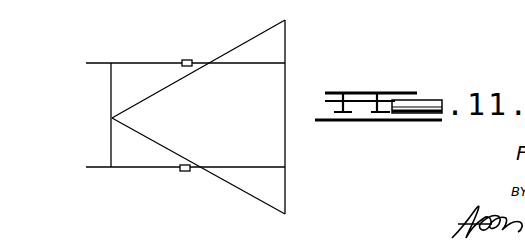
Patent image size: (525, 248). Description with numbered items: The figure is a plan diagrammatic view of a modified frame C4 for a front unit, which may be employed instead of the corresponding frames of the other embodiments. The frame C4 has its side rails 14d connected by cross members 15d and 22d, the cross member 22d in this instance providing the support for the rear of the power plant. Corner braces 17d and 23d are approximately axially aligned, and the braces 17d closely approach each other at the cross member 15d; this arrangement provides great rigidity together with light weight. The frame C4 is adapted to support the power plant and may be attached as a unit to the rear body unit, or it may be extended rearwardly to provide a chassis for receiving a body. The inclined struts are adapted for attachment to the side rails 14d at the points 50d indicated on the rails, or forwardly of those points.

The frame C4 is at (141, 62).
The side rails 14d is at (127, 168).
The cross member 15d is at (108, 128).
The corner braces 17d is at (158, 91).
The cross member 22d is at (285, 148).
The corner braces 23d is at (258, 202).
The points 50d is at (187, 60).